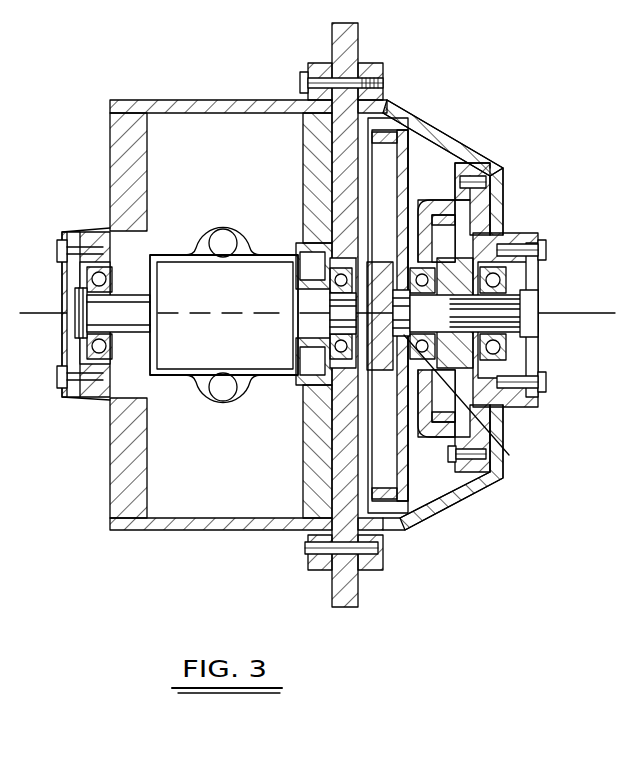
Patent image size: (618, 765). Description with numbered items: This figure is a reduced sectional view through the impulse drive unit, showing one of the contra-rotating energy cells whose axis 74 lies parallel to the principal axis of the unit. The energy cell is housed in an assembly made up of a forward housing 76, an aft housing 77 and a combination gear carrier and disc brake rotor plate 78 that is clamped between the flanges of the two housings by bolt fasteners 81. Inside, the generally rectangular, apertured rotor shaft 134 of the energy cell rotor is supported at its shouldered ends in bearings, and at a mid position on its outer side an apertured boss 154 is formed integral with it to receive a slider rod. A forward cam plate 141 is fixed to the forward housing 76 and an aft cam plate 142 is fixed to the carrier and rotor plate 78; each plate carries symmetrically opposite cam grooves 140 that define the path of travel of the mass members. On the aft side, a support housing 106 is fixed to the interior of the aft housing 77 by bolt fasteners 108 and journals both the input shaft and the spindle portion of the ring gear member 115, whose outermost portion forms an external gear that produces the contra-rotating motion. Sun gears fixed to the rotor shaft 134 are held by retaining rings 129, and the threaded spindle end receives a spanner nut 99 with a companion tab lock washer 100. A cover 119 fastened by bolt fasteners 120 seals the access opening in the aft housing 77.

The axis 74 is at (47, 313).
The forward housing 76 is at (163, 531).
The aft housing 77 is at (432, 512).
The combination gear carrier and disc brake rotor plate 78 is at (331, 592).
The bolt fasteners 81 is at (302, 80).
The spanner nuts 99 is at (531, 296).
The tab lock washers 100 is at (528, 292).
The support housing 106 is at (478, 165).
The bolt fasteners 108 is at (461, 458).
The ring gear member 115 is at (410, 126).
The cover 119 is at (538, 350).
The bolt fasteners 120 is at (541, 383).
The retaining rings 129 is at (472, 401).
The rotor shaft 134 is at (243, 262).
The cam grooves 140 is at (312, 214).
The forward cam plate 141 is at (148, 168).
The aft cam plate 142 is at (303, 150).
The apertured boss 154 is at (226, 417).